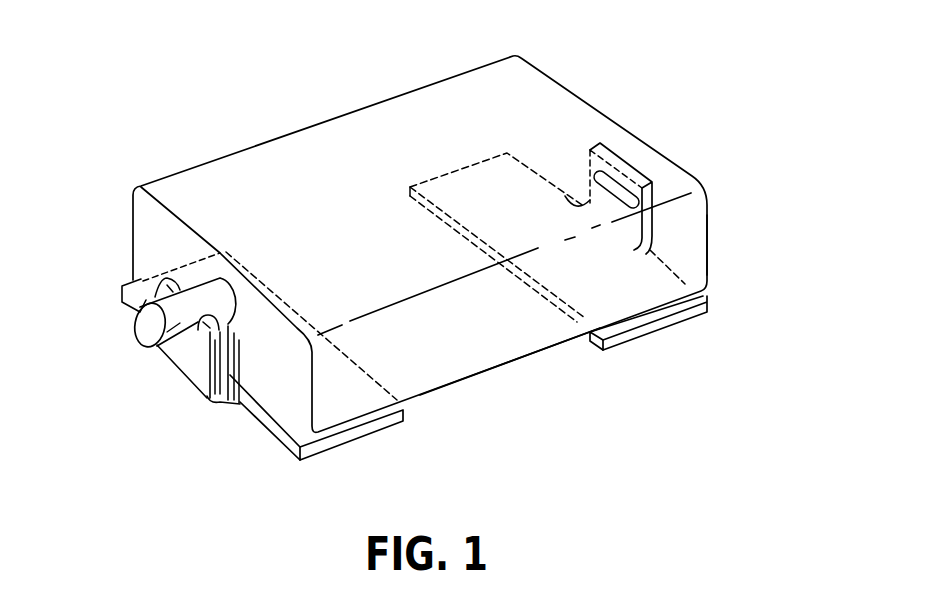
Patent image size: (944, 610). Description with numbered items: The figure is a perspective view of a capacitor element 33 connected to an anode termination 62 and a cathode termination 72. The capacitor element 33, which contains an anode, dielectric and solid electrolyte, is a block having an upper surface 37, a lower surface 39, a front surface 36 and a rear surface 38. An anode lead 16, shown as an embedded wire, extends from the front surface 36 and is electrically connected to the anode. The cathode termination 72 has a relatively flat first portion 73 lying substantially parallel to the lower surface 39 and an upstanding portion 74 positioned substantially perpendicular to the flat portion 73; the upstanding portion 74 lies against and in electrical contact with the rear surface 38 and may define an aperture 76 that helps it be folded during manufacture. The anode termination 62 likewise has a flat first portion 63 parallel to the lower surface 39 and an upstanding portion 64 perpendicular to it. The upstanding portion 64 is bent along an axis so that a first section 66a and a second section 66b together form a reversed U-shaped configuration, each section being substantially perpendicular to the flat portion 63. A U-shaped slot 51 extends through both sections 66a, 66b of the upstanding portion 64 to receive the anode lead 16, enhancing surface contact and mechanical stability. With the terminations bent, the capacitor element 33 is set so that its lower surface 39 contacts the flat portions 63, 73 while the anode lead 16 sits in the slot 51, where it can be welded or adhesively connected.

The capacitor element 33 is at (345, 152).
The upper surface 37 is at (570, 115).
The front surface 36 is at (147, 242).
The rear surface 38 is at (708, 240).
The lower surface 39 is at (503, 366).
The upstanding portion 74 is at (637, 173).
The aperture 76 is at (607, 181).
The anode lead 16 is at (210, 300).
The slot 51 is at (170, 353).
The upstanding portion 64 is at (187, 358).
The first section 66a is at (213, 395).
The second section 66b is at (227, 361).
The first portion 63 is at (356, 435).
The anode termination 62 is at (248, 423).
The cathode termination 72 is at (682, 320).
The first portion 73 is at (623, 340).